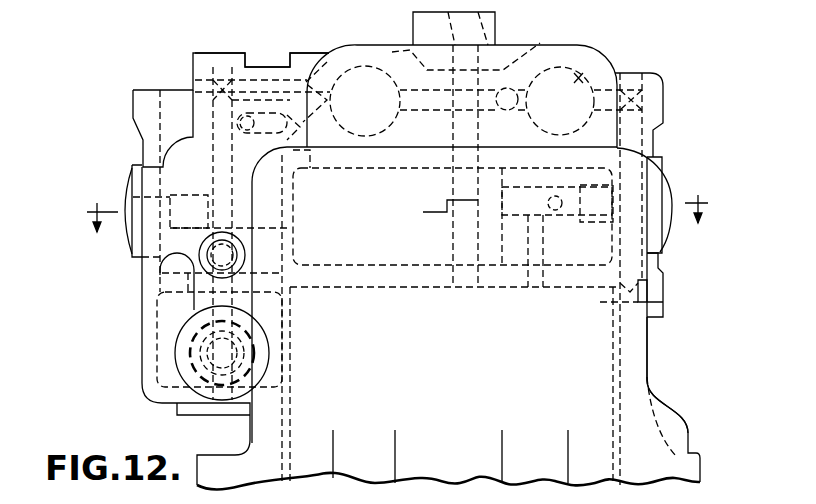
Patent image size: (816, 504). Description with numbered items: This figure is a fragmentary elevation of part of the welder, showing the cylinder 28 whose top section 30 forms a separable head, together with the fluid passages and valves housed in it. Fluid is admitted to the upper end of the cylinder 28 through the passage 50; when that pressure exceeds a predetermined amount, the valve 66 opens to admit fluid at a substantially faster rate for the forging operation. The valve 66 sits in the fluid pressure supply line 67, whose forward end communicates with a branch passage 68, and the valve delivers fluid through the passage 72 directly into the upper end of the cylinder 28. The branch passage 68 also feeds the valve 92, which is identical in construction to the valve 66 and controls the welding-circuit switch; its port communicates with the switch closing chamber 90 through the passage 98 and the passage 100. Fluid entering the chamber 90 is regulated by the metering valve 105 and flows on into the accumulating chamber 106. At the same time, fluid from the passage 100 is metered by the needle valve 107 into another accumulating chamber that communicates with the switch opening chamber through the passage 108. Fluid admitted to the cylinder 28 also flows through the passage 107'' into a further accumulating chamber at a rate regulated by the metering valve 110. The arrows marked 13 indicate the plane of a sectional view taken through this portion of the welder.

The passage 98 is at (263, 77).
The valve 92 is at (368, 85).
The branch passage 68 is at (485, 100).
The valve 66 is at (580, 76).
The fluid pressure supply line 67 is at (508, 116).
The passage 100 is at (220, 127).
The passage 108 is at (315, 165).
The passage 50 is at (453, 192).
The metering valve 110 is at (517, 217).
The accumulating chamber 106 is at (390, 243).
The passage 107'' is at (514, 275).
The passage 72 is at (628, 200).
The section line 13 is at (401, 225).
The metering valve 107 is at (167, 272).
The fluid pressure chamber 90 is at (170, 320).
The metering valve 105 is at (210, 355).
The cylinder 28 is at (590, 363).
The top section 30 is at (633, 387).